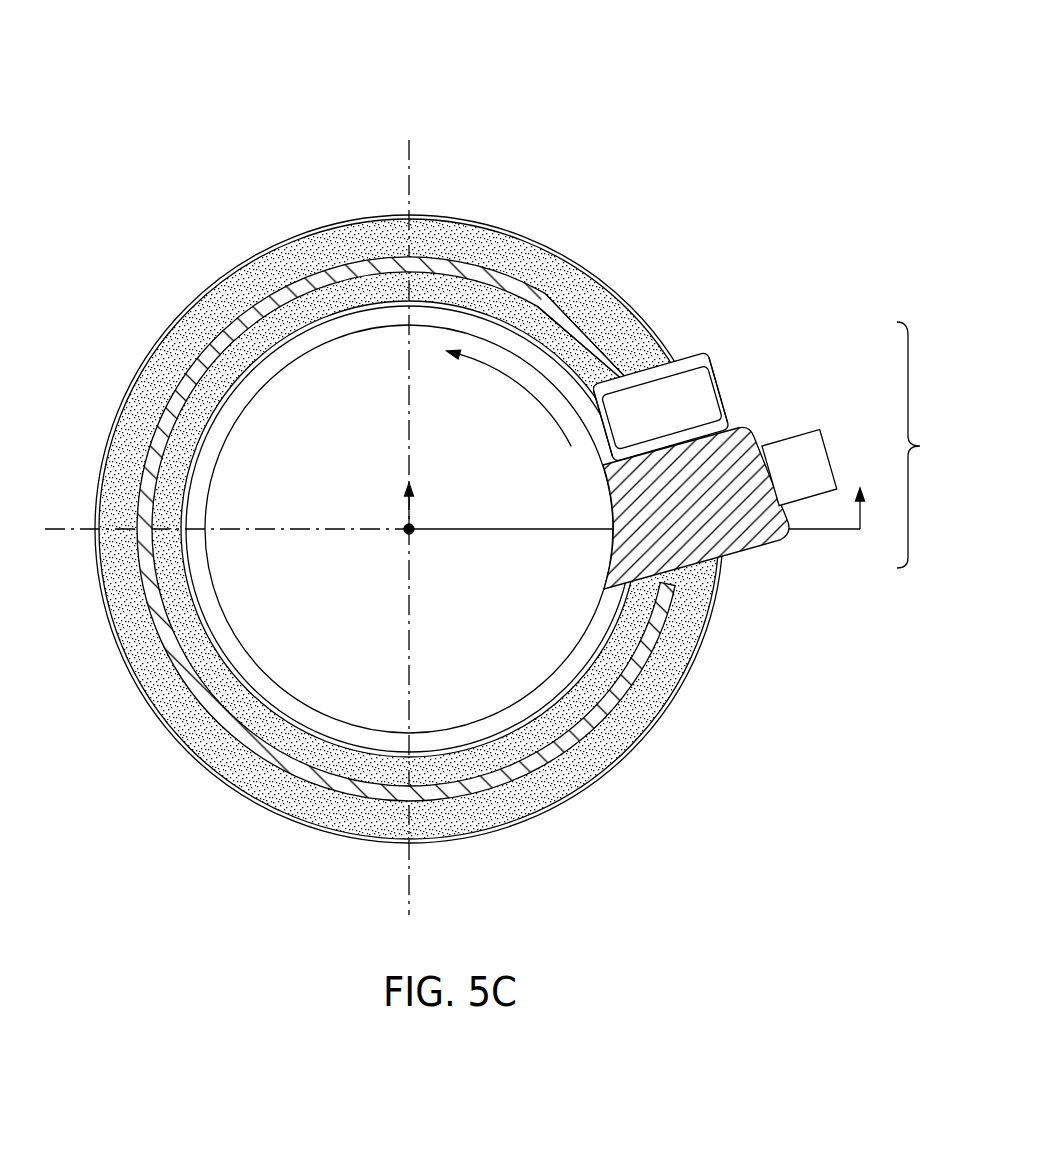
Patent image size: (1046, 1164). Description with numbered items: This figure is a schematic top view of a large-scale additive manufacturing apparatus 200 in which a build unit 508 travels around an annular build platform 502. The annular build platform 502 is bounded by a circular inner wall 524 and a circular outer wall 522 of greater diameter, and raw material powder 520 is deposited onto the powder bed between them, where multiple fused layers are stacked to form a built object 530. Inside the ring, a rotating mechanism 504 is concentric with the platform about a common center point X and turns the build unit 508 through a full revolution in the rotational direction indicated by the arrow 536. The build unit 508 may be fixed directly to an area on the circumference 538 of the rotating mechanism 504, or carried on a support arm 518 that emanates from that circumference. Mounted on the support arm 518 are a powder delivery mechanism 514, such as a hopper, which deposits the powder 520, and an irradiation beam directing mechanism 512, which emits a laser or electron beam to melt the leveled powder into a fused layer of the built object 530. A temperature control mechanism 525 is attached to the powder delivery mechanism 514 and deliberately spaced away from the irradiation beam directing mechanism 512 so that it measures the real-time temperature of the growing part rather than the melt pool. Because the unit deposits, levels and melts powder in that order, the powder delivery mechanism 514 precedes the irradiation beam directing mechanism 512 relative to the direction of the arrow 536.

The positioning device 200 is at (160, 84).
The annular build platform 502 is at (389, 501).
The rotating mechanism 504 is at (438, 348).
The build unit 508 is at (774, 455).
The irradiation beam directing mechanism 512 is at (833, 457).
The powder delivery mechanism 514 is at (727, 383).
The support arm 518 is at (767, 437).
The raw material powder 520 is at (648, 354).
The circular outer wall 522 is at (133, 380).
The circular inner wall 524 is at (180, 470).
The temperature control mechanism 525 is at (698, 364).
The built object 530 is at (590, 325).
The arrow 536 is at (537, 400).
The circumference 538 is at (312, 290).